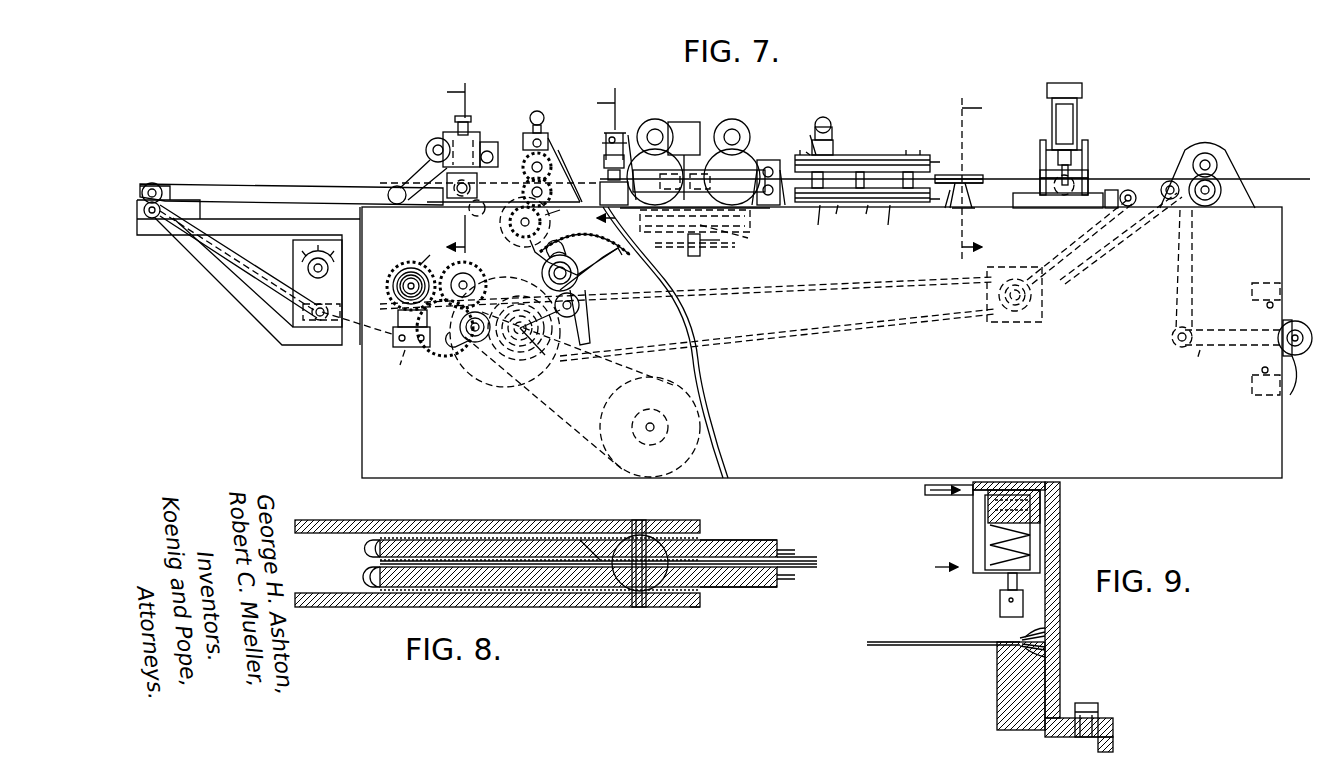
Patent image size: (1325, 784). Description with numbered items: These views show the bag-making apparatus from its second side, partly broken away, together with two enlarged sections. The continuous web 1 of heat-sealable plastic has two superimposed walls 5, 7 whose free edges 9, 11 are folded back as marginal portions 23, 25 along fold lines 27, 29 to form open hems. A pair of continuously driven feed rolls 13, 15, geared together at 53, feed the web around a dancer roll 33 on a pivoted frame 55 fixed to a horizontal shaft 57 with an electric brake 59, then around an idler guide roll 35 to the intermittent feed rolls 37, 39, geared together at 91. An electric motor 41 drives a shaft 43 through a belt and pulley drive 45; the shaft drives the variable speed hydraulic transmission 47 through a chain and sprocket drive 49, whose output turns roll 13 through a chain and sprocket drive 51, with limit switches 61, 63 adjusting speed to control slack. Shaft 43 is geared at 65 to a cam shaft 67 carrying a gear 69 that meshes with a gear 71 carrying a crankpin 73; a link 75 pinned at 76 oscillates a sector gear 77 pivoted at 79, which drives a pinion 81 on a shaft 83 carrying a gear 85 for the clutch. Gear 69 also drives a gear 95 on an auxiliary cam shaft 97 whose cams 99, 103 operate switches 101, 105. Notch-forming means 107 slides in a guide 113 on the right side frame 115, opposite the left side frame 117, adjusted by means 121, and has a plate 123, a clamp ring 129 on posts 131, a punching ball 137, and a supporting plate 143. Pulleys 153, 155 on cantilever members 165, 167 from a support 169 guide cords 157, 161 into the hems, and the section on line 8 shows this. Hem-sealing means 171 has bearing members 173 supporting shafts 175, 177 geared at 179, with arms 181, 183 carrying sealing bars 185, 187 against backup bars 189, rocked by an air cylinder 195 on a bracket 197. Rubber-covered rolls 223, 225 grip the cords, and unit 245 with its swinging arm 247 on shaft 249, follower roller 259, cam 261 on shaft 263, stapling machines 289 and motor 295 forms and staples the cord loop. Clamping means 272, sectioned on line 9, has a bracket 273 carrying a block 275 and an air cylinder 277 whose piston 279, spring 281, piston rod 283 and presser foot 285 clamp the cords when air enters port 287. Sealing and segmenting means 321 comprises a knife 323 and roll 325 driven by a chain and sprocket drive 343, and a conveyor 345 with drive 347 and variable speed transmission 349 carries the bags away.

In FIG. 7, the continuous web 1 is at (1283, 178).
In FIG. 8, the continuous web 1 is at (822, 550).
In FIG. 9, the continuous web 1 is at (893, 645).
In FIG. 8, the wall 5 is at (805, 555).
In FIG. 8, the wall 7 is at (805, 568).
In FIG. 7, the section line 8— 8 is at (956, 179).
In FIG. 7, the free edge 9 is at (616, 157).
In FIG. 8, the free edge 9 is at (580, 540).
In FIG. 8, the free edge 11 is at (583, 607).
In FIG. 7, the feed roll 13 is at (1215, 200).
In FIG. 7, the feed roll 15 is at (1195, 148).
In FIG. 8, the marginal portion 23 is at (470, 540).
In FIG. 9, the marginal portion 23 is at (1010, 640).
In FIG. 7, the marginal portion 25 is at (469, 167).
In FIG. 8, the marginal portion 25 is at (510, 590).
In FIG. 9, the marginal portion 25 is at (1010, 646).
In FIG. 8, the longitudinal fold line 27 is at (345, 522).
In FIG. 9, the longitudinal fold line 27 is at (1045, 628).
In FIG. 8, the longitudinal fold line 29 is at (350, 598).
In FIG. 9, the longitudinal fold line 29 is at (1045, 657).
In FIG. 7, the dancer roll 33 is at (1172, 330).
In FIG. 7, the idler guide roll 35 is at (1165, 205).
In FIG. 7, the intermittent feed roll 37 is at (480, 165).
In FIG. 7, the intermittent feed roll 39 is at (528, 136).
In FIG. 7, the electric motor 41 is at (600, 450).
In FIG. 7, the shaft 43 is at (523, 345).
In FIG. 7, the belt and pulley drive 45 is at (560, 410).
In FIG. 7, the variable speed hydraulic transmission 47 is at (1010, 325).
In FIG. 7, the chain and sprocket drive 49 is at (805, 332).
In FIG. 7, the chain and sprocket drive 51 is at (1080, 245).
In FIG. 7, the gearing 53 is at (1215, 165).
In FIG. 7, the pivoted frame 55 is at (1189, 359).
In FIG. 7, the horizontal shaft 57 is at (1297, 320).
In FIG. 7, the electric brake 59 is at (1299, 377).
In FIG. 7, the upper limit switch 61 is at (1252, 295).
In FIG. 7, the lower limit switch 63 is at (1252, 380).
In FIG. 7, the gearing 65 is at (490, 380).
In FIG. 7, the cam shaft 67 is at (475, 280).
In FIG. 7, the gear 69 is at (470, 262).
In FIG. 7, the gear 71 is at (440, 345).
In FIG. 7, the crankpin 73 is at (473, 345).
In FIG. 7, the link 75 is at (552, 265).
In FIG. 7, the pin connection 76 is at (575, 272).
In FIG. 7, the sector gear 77 is at (615, 250).
In FIG. 7, the pivot 79 is at (580, 305).
In FIG. 7, the pinion 81 is at (546, 216).
In FIG. 7, the shaft 83 is at (515, 223).
In FIG. 7, the gear 85 is at (600, 235).
In FIG. 7, the gearing 91 is at (566, 150).
In FIG. 7, the gear 95 is at (412, 265).
In FIG. 7, the auxiliary cam shaft 97 is at (400, 275).
In FIG. 7, the cam 99 is at (400, 284).
In FIG. 7, the switch 101 is at (391, 357).
In FIG. 7, the second cam 103 is at (429, 253).
In FIG. 7, the switch 105 is at (395, 340).
In FIG. 7, the notch-forming means 107 is at (1082, 128).
In FIG. 7, the guide 113 is at (1030, 205).
In FIG. 9, the right side frame 115 is at (1113, 740).
In FIG. 7, the left side frame 117 is at (829, 397).
In FIG. 7, the screw rotating means 121 is at (1106, 206).
In FIG. 7, the plate 123 is at (1046, 170).
In FIG. 7, the clamp ring 129 is at (1088, 170).
In FIG. 7, the posts 131 is at (1042, 142).
In FIG. 7, the ball 137 is at (1046, 152).
In FIG. 7, the supporting plate 143 is at (1052, 118).
In FIG. 7, the pulley 153 is at (975, 177).
In FIG. 8, the pulley 153 is at (735, 540).
In FIG. 7, the pulley 155 is at (983, 184).
In FIG. 8, the pulley 155 is at (725, 587).
In FIG. 8, the first cord 157 is at (372, 549).
In FIG. 9, the first cord 157 is at (1045, 636).
In FIG. 8, the second cord 161 is at (372, 577).
In FIG. 9, the second cord 161 is at (1045, 647).
In FIG. 7, the upper cantilever member 165 is at (960, 175).
In FIG. 8, the upper cantilever member 165 is at (668, 530).
In FIG. 7, the lower cantilever member 167 is at (948, 205).
In FIG. 8, the lower cantilever member 167 is at (685, 607).
In FIG. 7, the support 169 is at (972, 200).
In FIG. 7, the hem-sealing means 171 is at (882, 153).
In FIG. 7, the bearing members 173 is at (857, 143).
In FIG. 7, the upper shaft 175 is at (900, 174).
In FIG. 7, the lower shaft 177 is at (839, 215).
In FIG. 7, the gearing 179 is at (832, 158).
In FIG. 7, the arms 181 is at (906, 150).
In FIG. 7, the arms 183 is at (858, 222).
In FIG. 7, the upper sealing bar 185 is at (860, 172).
In FIG. 7, the lower sealing bar 187 is at (869, 215).
In FIG. 7, the backup bar 189 is at (918, 222).
In FIG. 7, the air cylinder 195 is at (823, 116).
In FIG. 7, the bracket 197 is at (812, 140).
In FIG. 7, the rubber-covered roll 223 is at (708, 221).
In FIG. 7, the rubber-covered roll 225 is at (765, 160).
In FIG. 7, the unit 245 is at (683, 120).
In FIG. 7, the swinging arm 247 is at (668, 184).
In FIG. 7, the shaft 249 is at (672, 247).
In FIG. 7, the cam follower roller 259 is at (738, 238).
In FIG. 7, the cam 261 is at (694, 257).
In FIG. 7, the shaft 263 is at (718, 247).
In FIG. 7, the clamping means 272 is at (602, 135).
In FIG. 9, the clamping means 272 is at (933, 566).
In FIG. 7, the bracket 273 is at (634, 159).
In FIG. 9, the bracket 273 is at (1060, 543).
In FIG. 7, the block 275 is at (606, 193).
In FIG. 9, the block 275 is at (997, 686).
In FIG. 7, the vertical air cylinder 277 is at (604, 160).
In FIG. 9, the vertical air cylinder 277 is at (973, 531).
In FIG. 9, the piston 279 is at (1040, 500).
In FIG. 9, the spring 281 is at (1035, 518).
In FIG. 9, the piston rod 283 is at (1008, 580).
In FIG. 7, the presser foot 285 is at (608, 175).
In FIG. 9, the presser foot 285 is at (1000, 605).
In FIG. 7, the port 287 is at (611, 136).
In FIG. 9, the port 287 is at (975, 497).
In FIG. 7, the stapling machine 289 is at (695, 178).
In FIG. 7, the electric motor 295 is at (660, 118).
In FIG. 7, the heat sealing and segmenting means 321 is at (456, 128).
In FIG. 7, the knife 323 is at (430, 143).
In FIG. 7, the roll 325 is at (420, 172).
In FIG. 7, the chain and sprocket drive 343 is at (503, 164).
In FIG. 7, the endless belt conveyor means 345 is at (312, 186).
In FIG. 7, the conveyor drive 347 is at (268, 290).
In FIG. 7, the variable speed transmission 349 is at (300, 275).